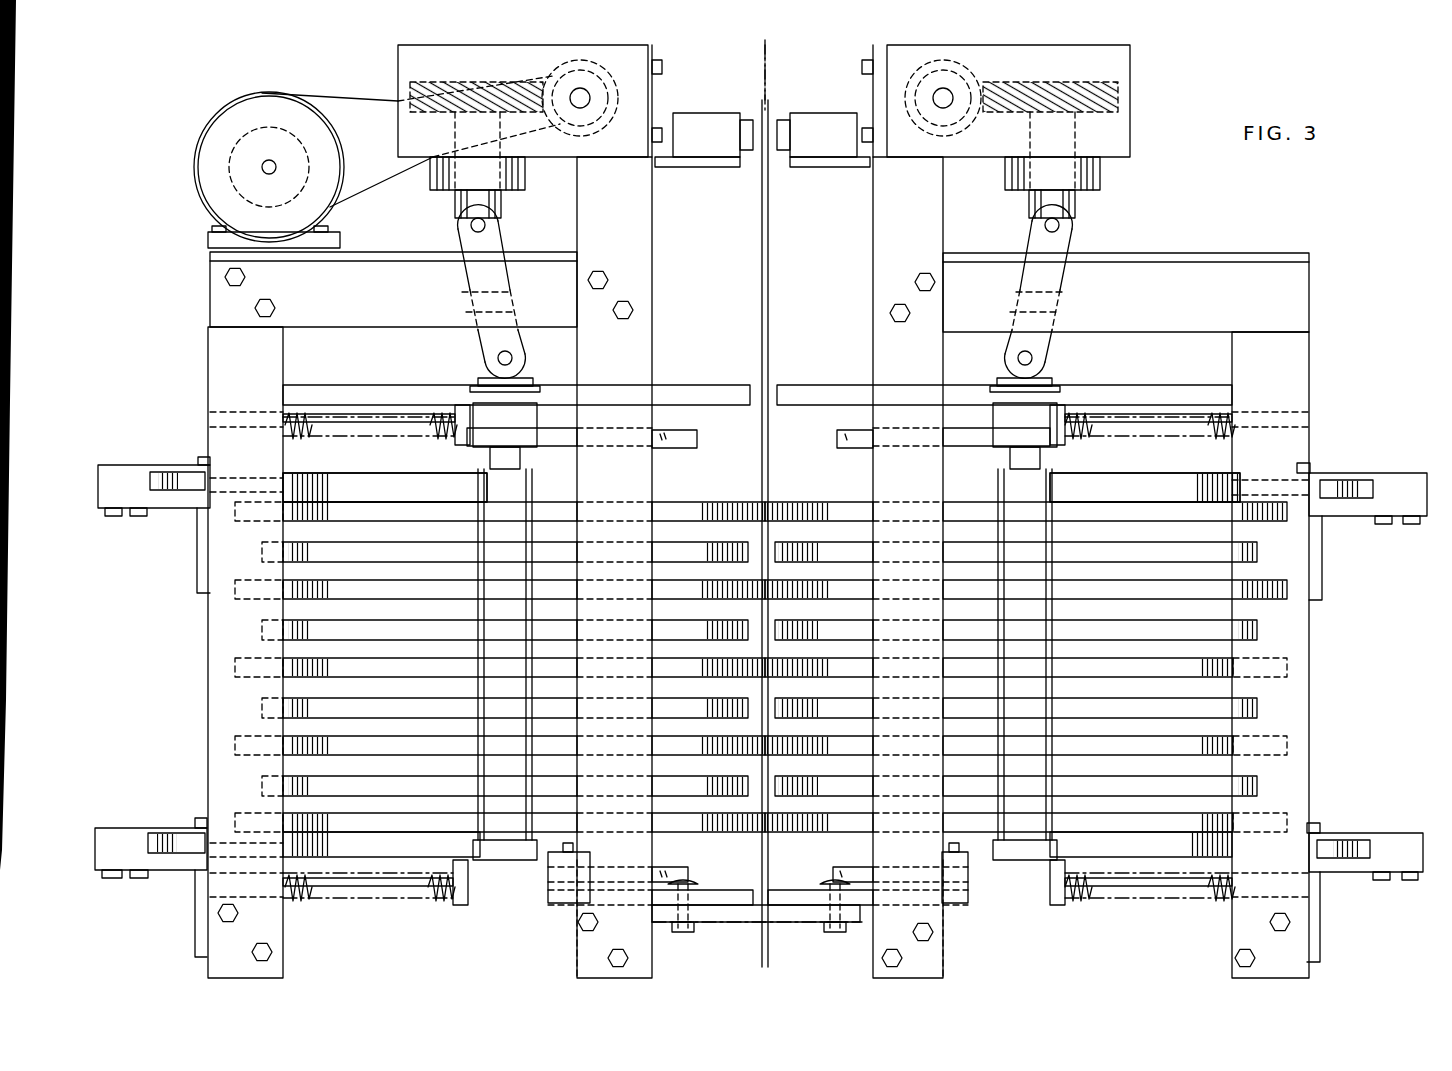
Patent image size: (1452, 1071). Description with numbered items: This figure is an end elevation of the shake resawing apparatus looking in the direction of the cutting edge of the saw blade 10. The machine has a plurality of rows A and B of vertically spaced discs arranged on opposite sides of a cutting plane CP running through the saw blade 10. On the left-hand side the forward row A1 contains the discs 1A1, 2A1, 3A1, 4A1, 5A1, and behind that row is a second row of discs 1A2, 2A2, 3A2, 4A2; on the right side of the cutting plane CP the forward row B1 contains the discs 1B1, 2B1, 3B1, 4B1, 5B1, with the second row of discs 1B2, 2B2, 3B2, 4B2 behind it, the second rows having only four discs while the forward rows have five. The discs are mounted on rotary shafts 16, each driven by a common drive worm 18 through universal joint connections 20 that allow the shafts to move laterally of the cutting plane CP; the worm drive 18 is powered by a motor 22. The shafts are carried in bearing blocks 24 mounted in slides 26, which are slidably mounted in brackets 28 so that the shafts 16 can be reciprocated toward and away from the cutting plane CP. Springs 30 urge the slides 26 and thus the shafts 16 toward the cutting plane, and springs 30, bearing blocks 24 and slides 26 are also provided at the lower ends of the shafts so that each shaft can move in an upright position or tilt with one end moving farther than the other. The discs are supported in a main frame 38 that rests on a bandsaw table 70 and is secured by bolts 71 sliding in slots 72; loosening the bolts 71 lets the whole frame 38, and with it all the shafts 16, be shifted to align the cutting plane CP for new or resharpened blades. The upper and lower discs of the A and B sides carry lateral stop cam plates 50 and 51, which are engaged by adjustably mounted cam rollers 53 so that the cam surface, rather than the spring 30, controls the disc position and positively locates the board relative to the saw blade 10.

The saw blade 10 is at (770, 306).
The cutting plane CP is at (770, 62).
The rotary shafts 16 is at (1048, 462).
The common drive worm 18 is at (415, 82).
The universal joint connections 20 is at (1058, 242).
The motor 22 is at (215, 142).
The bearing blocks 24 is at (532, 448).
The slides 26 is at (697, 438).
The brackets 28 is at (568, 862).
The springs 30 is at (308, 412).
The main frame 38 is at (1300, 290).
The cam plate 50 is at (431, 483).
The cam plate 51 is at (1220, 478).
The cam roller 53 is at (192, 475).
The bandsaw table 70 is at (690, 905).
The bolts 71 is at (690, 882).
The slots 72 is at (700, 895).
The rows of discs A is at (434, 366).
The rows of discs B is at (1115, 375).
The A1 row of discs A1 is at (408, 476).
The B1 row of discs B1 is at (1090, 505).
The disc 1A1 is at (355, 500).
The disc 2A1 is at (295, 582).
The disc 3A1 is at (295, 660).
The disc 4A1 is at (295, 738).
The disc 5A1 is at (295, 815).
The disc 1B1 is at (1150, 503).
The disc 2B1 is at (1240, 584).
The disc 3B1 is at (1235, 668).
The disc 4B1 is at (1235, 744).
The disc 5B1 is at (1235, 821).
The disc 1A2 is at (710, 550).
The disc 2A2 is at (710, 628).
The disc 3A2 is at (710, 706).
The disc 4A2 is at (710, 784).
The disc 1B2 is at (812, 550).
The disc 2B2 is at (812, 628).
The disc 3B2 is at (812, 706).
The disc 4B2 is at (802, 784).